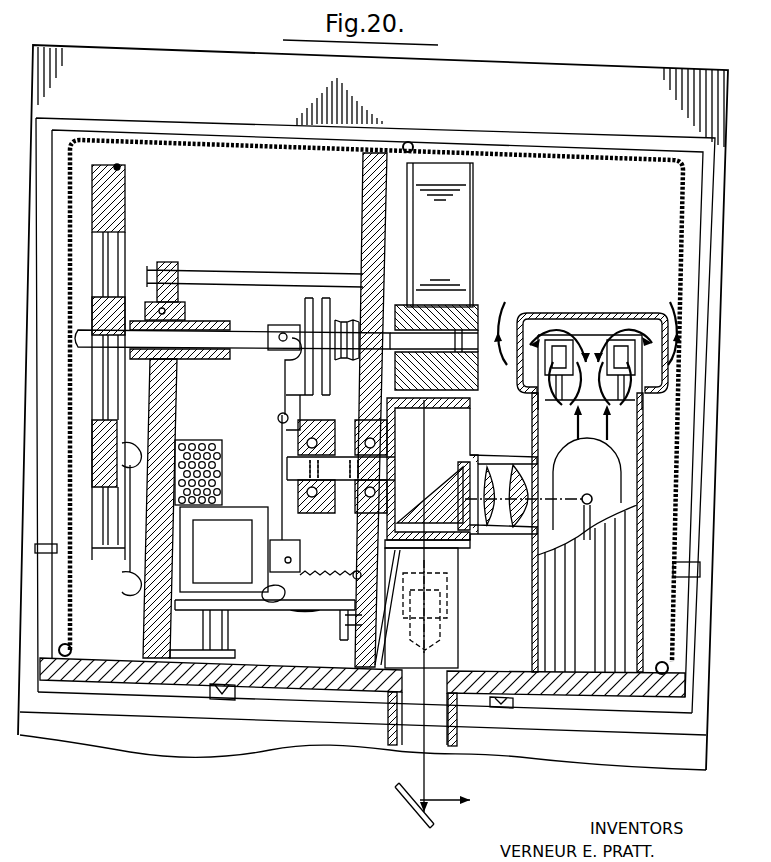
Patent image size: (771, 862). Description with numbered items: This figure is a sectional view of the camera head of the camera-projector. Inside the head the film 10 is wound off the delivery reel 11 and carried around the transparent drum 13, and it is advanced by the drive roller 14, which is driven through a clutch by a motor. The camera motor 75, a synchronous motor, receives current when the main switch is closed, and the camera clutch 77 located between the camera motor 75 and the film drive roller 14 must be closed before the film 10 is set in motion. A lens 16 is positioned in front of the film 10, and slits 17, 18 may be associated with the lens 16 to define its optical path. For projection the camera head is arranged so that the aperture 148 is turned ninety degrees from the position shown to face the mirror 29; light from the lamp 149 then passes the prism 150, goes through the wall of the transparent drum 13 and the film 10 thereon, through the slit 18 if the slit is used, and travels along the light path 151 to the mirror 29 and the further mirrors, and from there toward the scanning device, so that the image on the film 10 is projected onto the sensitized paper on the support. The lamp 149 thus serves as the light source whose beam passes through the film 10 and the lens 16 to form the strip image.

The film 10 is at (455, 545).
The delivery reel 11 is at (476, 198).
The transparent drum 13 is at (470, 402).
The drive roller 14 is at (478, 390).
The lens 16 is at (448, 612).
The slit 17 is at (447, 554).
The slit 18 is at (456, 746).
The mirror 29 is at (405, 806).
The camera motor 75 is at (120, 585).
The camera clutch 77 is at (224, 549).
The aperture 148 is at (400, 746).
The lamp 149 is at (587, 489).
The prism 150 is at (438, 478).
The light path 151 is at (423, 803).